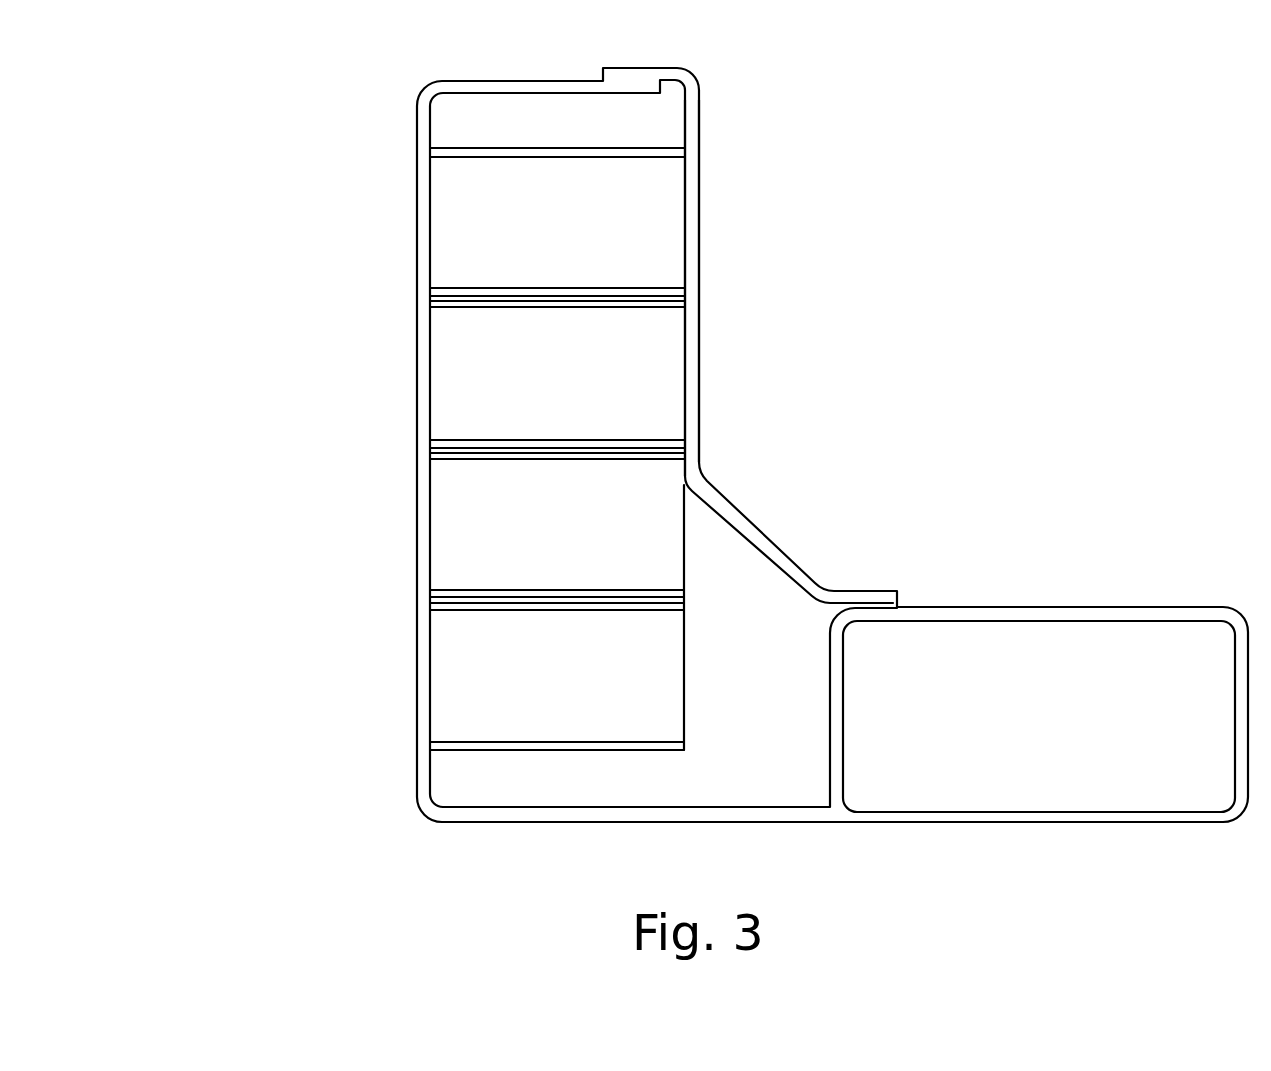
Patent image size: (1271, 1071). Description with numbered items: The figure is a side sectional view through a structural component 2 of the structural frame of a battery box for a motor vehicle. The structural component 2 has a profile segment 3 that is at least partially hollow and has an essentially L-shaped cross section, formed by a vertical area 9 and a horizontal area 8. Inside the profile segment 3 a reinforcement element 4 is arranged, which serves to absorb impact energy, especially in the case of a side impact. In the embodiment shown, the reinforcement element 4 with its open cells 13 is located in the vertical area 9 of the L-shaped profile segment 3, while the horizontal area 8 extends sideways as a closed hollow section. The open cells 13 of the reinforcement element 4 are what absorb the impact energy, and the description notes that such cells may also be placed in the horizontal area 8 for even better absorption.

The structural component 2 is at (442, 81).
The profile segment 3 is at (442, 81).
The reinforcement element 4 is at (470, 287).
The horizontal area 8 is at (1103, 608).
The vertical area 9 is at (700, 288).
The open cell 13 is at (470, 405).